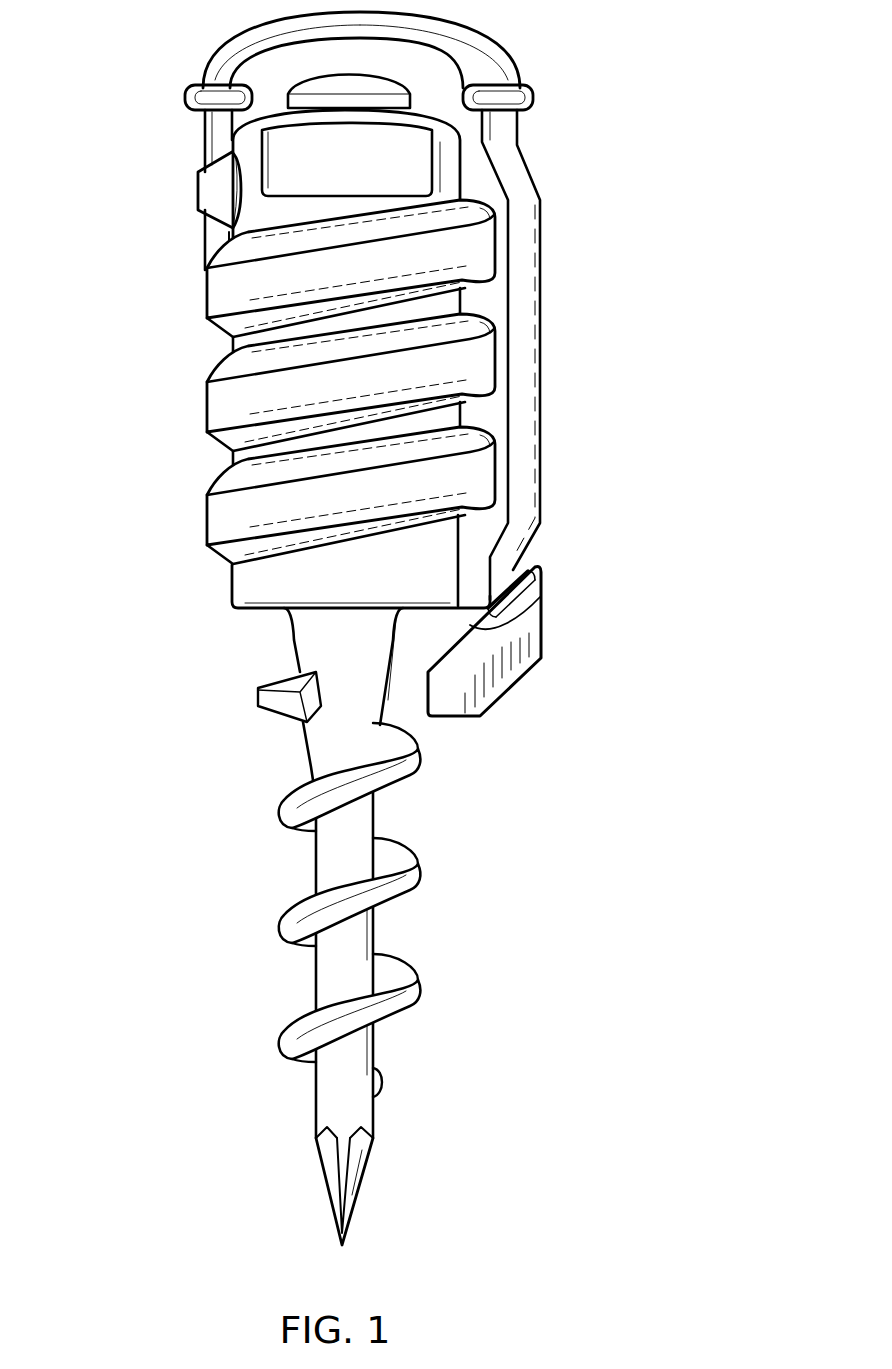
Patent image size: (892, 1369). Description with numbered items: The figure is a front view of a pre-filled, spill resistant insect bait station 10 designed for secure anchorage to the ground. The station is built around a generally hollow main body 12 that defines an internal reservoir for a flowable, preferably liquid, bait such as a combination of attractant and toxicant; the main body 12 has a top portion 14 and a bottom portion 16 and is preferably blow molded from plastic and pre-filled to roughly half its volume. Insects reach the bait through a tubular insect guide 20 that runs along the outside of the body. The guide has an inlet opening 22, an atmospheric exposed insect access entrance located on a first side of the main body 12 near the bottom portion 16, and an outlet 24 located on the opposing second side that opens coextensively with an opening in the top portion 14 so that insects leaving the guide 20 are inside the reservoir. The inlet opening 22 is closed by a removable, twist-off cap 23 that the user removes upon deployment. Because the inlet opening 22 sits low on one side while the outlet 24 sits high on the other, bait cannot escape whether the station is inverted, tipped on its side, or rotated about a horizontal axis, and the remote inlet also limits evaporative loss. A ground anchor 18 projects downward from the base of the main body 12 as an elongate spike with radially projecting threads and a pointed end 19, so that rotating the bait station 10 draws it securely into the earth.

The insect bait station 10 is at (386, 628).
The main body 12 is at (205, 410).
The top portion 14 is at (440, 176).
The bottom portion 16 is at (232, 607).
The ground anchor 18 is at (289, 926).
The pointed end 19 is at (360, 1168).
The insect guide 20 is at (541, 318).
The inlet opening 22 is at (531, 641).
The removable cap 23 is at (488, 677).
The outlet 24 is at (205, 194).